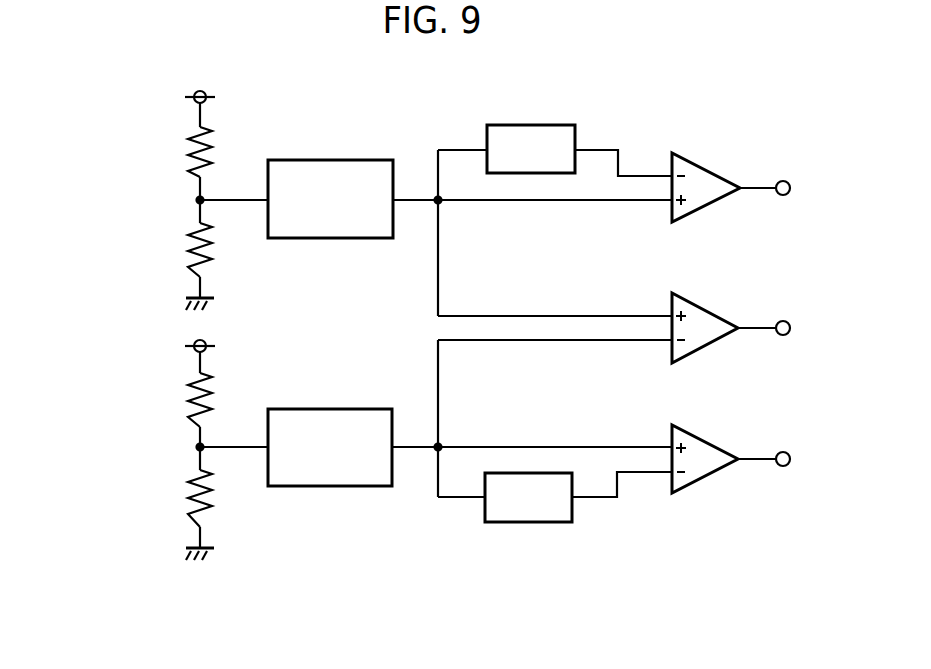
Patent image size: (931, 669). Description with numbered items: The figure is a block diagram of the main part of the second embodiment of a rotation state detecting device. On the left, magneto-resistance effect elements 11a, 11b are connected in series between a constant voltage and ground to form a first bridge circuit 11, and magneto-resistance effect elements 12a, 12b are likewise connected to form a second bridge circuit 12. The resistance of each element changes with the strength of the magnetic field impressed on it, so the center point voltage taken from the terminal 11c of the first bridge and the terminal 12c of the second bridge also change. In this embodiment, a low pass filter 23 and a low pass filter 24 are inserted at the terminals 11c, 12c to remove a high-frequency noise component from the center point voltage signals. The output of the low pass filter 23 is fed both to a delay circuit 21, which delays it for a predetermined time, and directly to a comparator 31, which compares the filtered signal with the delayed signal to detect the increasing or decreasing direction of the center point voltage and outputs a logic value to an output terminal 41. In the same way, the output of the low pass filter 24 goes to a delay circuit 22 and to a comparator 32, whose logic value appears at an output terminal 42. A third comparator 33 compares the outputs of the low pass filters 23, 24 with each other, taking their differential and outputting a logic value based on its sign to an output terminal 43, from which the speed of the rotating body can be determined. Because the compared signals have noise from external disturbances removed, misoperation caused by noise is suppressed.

The first bridge circuit 11 is at (167, 200).
The magneto-resistance effect element 11a is at (187, 150).
The magneto-resistance effect element 11b is at (187, 251).
The terminal 11c is at (231, 199).
The second bridge circuit 12 is at (167, 450).
The magneto-resistance effect element 12a is at (187, 398).
The magneto-resistance effect element 12b is at (187, 500).
The terminal 12c is at (231, 446).
The delay circuit 21 is at (540, 125).
The delay circuit 22 is at (535, 522).
The low pass filter 23 is at (335, 160).
The low pass filter 24 is at (328, 409).
The comparator 31 is at (706, 168).
The comparator 32 is at (707, 478).
The comparator 33 is at (707, 307).
The output terminal 41 is at (785, 180).
The output terminal 42 is at (785, 452).
The output terminal 43 is at (785, 320).